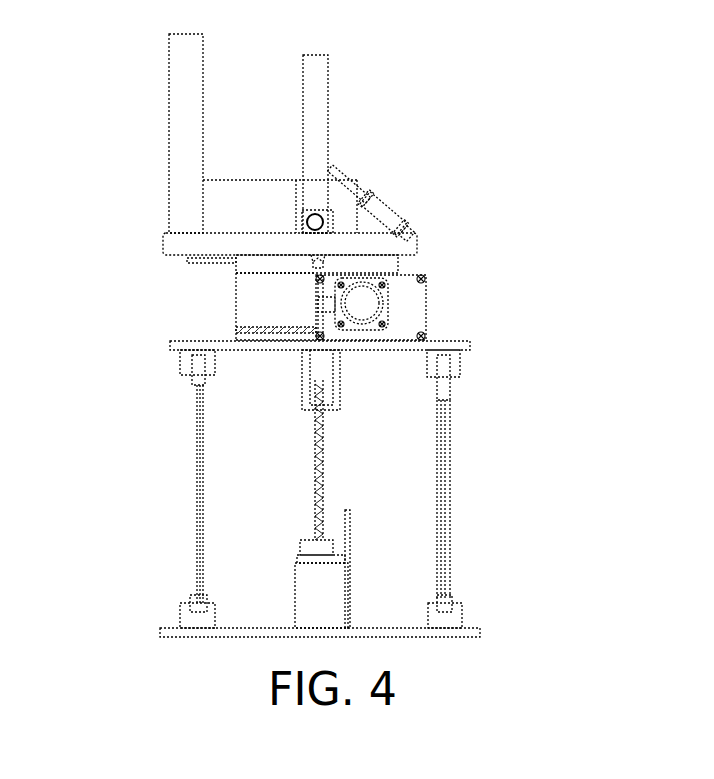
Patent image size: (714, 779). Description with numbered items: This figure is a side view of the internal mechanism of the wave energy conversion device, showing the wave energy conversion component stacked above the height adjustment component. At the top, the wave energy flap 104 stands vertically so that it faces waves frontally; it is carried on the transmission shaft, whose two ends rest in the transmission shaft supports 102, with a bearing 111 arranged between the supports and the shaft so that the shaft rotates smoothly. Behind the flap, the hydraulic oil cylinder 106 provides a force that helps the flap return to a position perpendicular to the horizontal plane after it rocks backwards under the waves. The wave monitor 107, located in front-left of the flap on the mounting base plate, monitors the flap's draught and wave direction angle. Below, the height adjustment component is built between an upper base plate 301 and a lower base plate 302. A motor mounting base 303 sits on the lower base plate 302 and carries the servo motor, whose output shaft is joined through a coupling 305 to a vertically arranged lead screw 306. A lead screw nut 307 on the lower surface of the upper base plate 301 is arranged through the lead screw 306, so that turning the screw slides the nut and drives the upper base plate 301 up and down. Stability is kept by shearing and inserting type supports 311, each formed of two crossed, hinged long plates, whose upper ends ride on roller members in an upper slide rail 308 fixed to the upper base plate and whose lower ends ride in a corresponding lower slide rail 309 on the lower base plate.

The wave monitor 107 is at (184, 80).
The wave energy flap 104 is at (317, 78).
The transmission shaft support 102 is at (315, 216).
The hydraulic oil cylinder 106 is at (387, 205).
The bearing 111 is at (323, 223).
The upper base plate 301 is at (432, 348).
The lower base plate 302 is at (415, 637).
The motor mounting base 303 is at (337, 593).
The coupling 305 is at (315, 548).
The lead screw 306 is at (318, 455).
The lead screw nut 307 is at (307, 368).
The upper slide rail 308 is at (455, 363).
The lower slide rail 309 is at (458, 603).
The shearing and inserting type support 311 is at (448, 418).